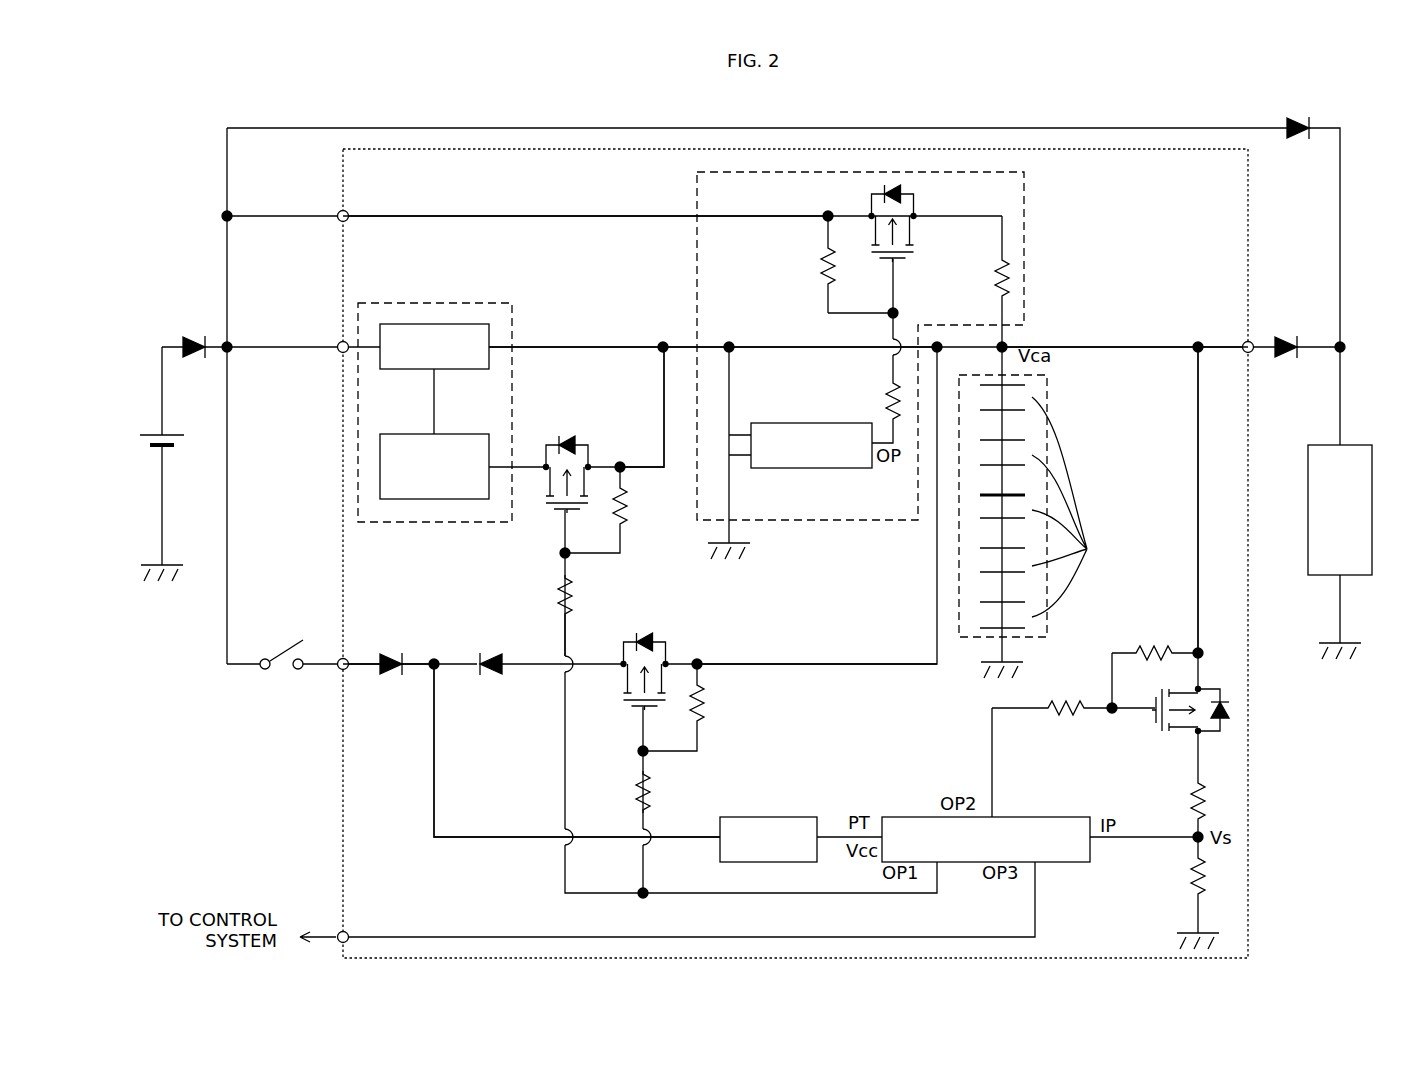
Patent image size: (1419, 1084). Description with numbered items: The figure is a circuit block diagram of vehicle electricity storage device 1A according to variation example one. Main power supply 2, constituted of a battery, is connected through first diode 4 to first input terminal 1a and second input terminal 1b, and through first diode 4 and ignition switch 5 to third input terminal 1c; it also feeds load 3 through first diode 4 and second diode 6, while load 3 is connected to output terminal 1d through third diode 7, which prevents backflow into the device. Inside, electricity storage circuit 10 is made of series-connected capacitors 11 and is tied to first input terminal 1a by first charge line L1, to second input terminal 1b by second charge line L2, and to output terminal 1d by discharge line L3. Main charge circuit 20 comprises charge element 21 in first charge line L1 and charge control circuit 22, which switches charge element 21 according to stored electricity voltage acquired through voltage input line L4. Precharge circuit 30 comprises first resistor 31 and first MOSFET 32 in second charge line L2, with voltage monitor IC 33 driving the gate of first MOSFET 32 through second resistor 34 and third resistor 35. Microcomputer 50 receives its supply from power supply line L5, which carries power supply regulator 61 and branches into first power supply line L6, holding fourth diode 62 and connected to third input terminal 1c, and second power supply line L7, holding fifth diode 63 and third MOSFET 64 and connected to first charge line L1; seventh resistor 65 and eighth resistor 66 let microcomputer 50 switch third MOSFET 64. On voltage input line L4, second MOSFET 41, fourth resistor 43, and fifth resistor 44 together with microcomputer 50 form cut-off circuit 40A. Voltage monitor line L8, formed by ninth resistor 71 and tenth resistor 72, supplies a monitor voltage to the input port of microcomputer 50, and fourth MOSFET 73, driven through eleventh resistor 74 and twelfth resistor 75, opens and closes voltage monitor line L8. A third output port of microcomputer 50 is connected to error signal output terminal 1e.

The vehicle electricity storage device 1A is at (339, 159).
The first input terminal 1a is at (333, 360).
The second input terminal 1b is at (333, 228).
The third input terminal 1c is at (338, 655).
The output terminal 1d is at (1255, 360).
The error signal output terminal 1e is at (338, 928).
The main power supply 2 is at (150, 425).
The load 3 is at (1355, 435).
The first diode 4 is at (190, 330).
The ignition switch 5 is at (285, 640).
The second diode 6 is at (1297, 147).
The third diode 7 is at (1285, 330).
The electricity storage circuit 10 is at (967, 645).
The capacitors 11 is at (1049, 506).
The main charge circuit 20 is at (420, 303).
The charge element 21 is at (458, 324).
The charge control circuit 22 is at (433, 500).
The precharge circuit 30 is at (697, 285).
The first resistor 31 is at (1010, 255).
The first MOSFET 32 is at (893, 180).
The voltage monitor IC 33 is at (808, 470).
The second resistor 34 is at (817, 270).
The third resistor 35 is at (882, 396).
The cut-off circuit 40A is at (590, 600).
The second MOSFET 41 is at (555, 440).
The fourth resistor 43 is at (635, 515).
The fifth resistor 44 is at (555, 590).
The microcomputer 50 is at (1030, 817).
The power supply regulator 61 is at (775, 815).
The fourth diode 62 is at (388, 680).
The fifth diode 63 is at (490, 680).
The third MOSFET 64 is at (676, 650).
The seventh resistor 65 is at (716, 710).
The eighth resistor 66 is at (628, 790).
The ninth resistor 71 is at (1212, 800).
The tenth resistor 72 is at (1212, 880).
The fourth MOSFET 73 is at (1227, 690).
The eleventh resistor 74 is at (1150, 640).
The twelfth resistor 75 is at (1070, 690).
The first charge line L1 is at (590, 347).
The second charge line L2 is at (575, 216).
The discharge line L3 is at (1128, 347).
The voltage input line L4 is at (660, 400).
The power supply line L5 is at (483, 840).
The first power supply line L6 is at (365, 660).
The second power supply line L7 is at (765, 660).
The voltage monitor line L8 is at (1200, 605).